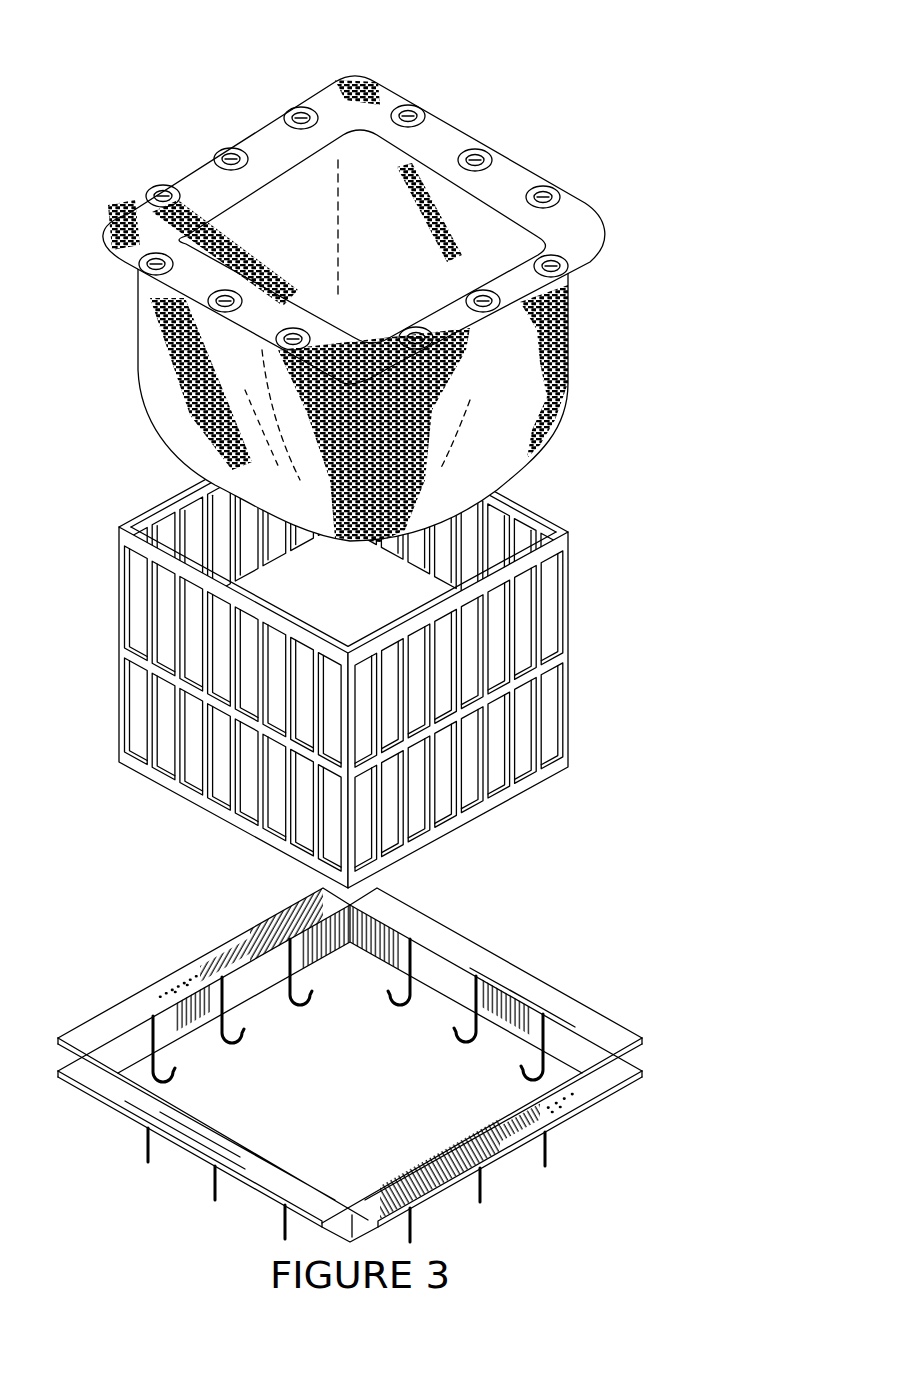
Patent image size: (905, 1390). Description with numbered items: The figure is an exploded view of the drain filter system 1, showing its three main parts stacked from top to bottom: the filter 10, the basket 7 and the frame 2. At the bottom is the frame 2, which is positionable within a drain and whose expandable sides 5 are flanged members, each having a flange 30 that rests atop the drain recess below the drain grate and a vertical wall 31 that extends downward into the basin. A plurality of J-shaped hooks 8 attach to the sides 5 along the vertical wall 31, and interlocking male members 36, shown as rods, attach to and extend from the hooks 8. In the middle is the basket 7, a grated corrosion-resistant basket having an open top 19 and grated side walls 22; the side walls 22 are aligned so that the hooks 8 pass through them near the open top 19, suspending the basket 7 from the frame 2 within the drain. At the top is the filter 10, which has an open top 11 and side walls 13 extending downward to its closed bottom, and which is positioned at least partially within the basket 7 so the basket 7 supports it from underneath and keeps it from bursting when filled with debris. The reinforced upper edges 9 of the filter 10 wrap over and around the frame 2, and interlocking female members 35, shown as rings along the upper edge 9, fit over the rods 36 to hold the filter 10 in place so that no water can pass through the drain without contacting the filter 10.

The drain filter system 1 is at (722, 450).
The frame 2 is at (595, 1025).
The sides 5 is at (118, 1025).
The basket 7 is at (588, 562).
The J-shaped hooks 8 is at (246, 1030).
The upper edges 9 is at (380, 90).
The filter 10 is at (472, 387).
The open top 11 is at (393, 217).
The side walls 13 is at (227, 387).
The open top 19 is at (450, 550).
The grated side walls 22 is at (515, 677).
The flange 30 is at (238, 937).
The vertical wall 31 is at (323, 953).
The interlocking female members 35 is at (162, 195).
The interlocking male members 36 is at (215, 1185).